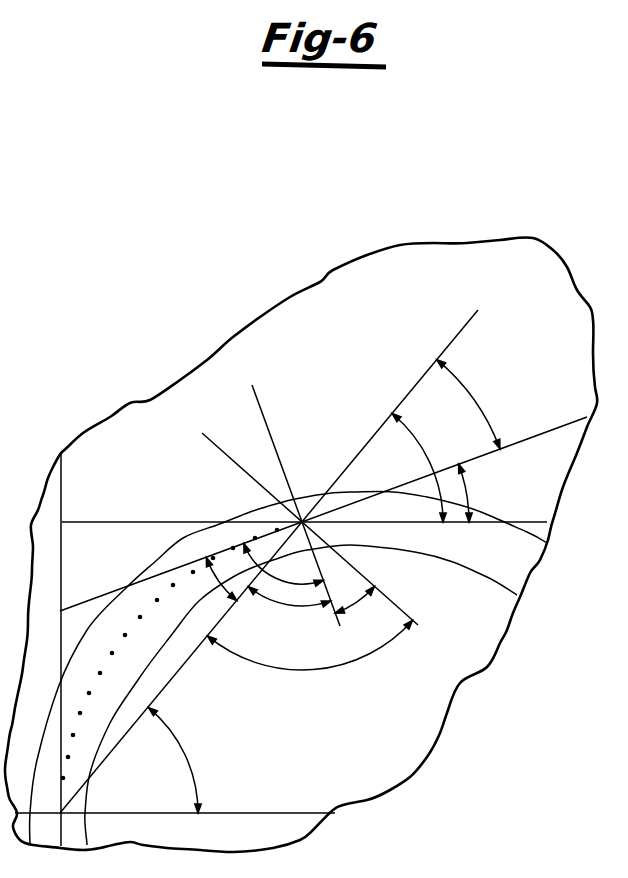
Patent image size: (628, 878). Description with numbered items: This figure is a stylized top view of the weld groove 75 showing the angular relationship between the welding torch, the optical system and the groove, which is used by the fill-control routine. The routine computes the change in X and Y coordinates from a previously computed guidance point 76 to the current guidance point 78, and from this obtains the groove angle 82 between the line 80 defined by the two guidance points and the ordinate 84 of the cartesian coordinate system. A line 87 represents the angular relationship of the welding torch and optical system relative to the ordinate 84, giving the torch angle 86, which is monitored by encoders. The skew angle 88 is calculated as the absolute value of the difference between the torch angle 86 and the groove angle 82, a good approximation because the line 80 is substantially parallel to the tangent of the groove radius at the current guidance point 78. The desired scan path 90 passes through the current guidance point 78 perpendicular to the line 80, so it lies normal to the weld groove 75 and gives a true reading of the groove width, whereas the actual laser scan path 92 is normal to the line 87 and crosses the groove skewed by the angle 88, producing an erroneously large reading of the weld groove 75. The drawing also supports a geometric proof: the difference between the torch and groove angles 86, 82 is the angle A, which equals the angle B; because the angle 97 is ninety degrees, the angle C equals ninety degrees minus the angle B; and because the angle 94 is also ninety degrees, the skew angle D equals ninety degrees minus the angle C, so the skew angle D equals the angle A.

The weld groove 75 is at (498, 565).
The previously computed guidance point 76 is at (276, 527).
The current guidance point 78 is at (303, 520).
The line defined by the guidance points 80 is at (513, 442).
The groove angle 82 is at (472, 488).
The ordinate 84 is at (539, 521).
The torch angle 86 is at (420, 447).
The line illustrating torch and optical system angular relationship 87 is at (453, 339).
The skew angle 88 is at (380, 600).
The desired scan path 90 is at (337, 620).
The actual laser scan path 92 is at (397, 603).
The angle 94 is at (343, 670).
The angle 97 is at (281, 584).
The angle A is at (467, 388).
The angle B is at (220, 584).
The angle C is at (316, 605).
The skew angle D is at (391, 617).